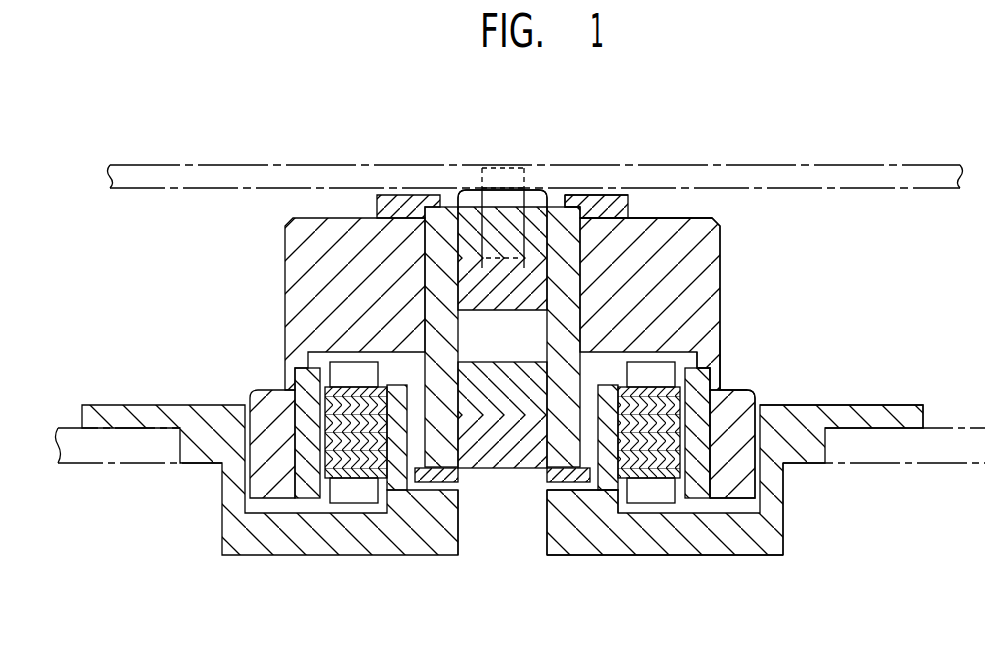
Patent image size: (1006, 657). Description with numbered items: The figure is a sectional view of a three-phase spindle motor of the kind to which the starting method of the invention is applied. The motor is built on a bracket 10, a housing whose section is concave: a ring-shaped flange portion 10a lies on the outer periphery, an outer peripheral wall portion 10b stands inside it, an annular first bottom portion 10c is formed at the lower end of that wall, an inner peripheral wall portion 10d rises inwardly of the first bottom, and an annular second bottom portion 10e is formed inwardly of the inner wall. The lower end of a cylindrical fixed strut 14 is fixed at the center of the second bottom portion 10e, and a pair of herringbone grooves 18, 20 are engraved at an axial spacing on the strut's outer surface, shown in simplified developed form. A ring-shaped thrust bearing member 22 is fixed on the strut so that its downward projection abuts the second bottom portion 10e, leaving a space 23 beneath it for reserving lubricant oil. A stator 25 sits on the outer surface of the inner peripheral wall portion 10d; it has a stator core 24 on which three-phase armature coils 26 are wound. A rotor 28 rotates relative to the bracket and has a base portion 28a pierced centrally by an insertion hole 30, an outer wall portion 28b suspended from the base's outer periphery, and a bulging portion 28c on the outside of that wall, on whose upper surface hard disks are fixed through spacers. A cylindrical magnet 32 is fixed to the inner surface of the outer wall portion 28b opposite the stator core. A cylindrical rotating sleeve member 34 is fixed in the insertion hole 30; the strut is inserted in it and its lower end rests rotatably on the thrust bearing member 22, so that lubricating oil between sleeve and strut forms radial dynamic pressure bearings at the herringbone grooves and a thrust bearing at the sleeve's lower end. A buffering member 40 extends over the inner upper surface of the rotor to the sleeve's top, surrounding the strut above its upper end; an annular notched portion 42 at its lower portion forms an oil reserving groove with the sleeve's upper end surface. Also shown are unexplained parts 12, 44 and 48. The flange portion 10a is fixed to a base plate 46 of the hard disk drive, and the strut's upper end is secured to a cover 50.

The bracket 10 is at (761, 555).
The flange portion 10a is at (893, 405).
The outer peripheral wall portion 10b is at (770, 490).
The first bottom portion 10c is at (675, 542).
The inner peripheral wall portion 10d is at (603, 415).
The second bottom portion 10e is at (589, 488).
The yoke 12 is at (708, 500).
The fixed strut 14 is at (518, 512).
The herringbone groove 18 is at (532, 195).
The herringbone groove 20 is at (493, 470).
The thrust bearing member 22 is at (448, 490).
The space 23 is at (408, 500).
The stator core 24 is at (645, 390).
The stator 25 is at (322, 500).
The armature coils 26 is at (663, 368).
The rotor 28 is at (281, 283).
The base portion 28a is at (705, 255).
The outer wall portion 28b is at (718, 380).
The bulging portion 28c is at (740, 407).
The insertion hole 30 is at (690, 218).
The magnet 32 is at (717, 392).
The rotating sleeve member 34 is at (445, 198).
The buffering member 40 is at (600, 210).
The notched portion 42 is at (578, 197).
The spring 44 is at (592, 202).
The base plate 46 is at (920, 440).
The screw 48 is at (505, 180).
The cover 50 is at (765, 175).